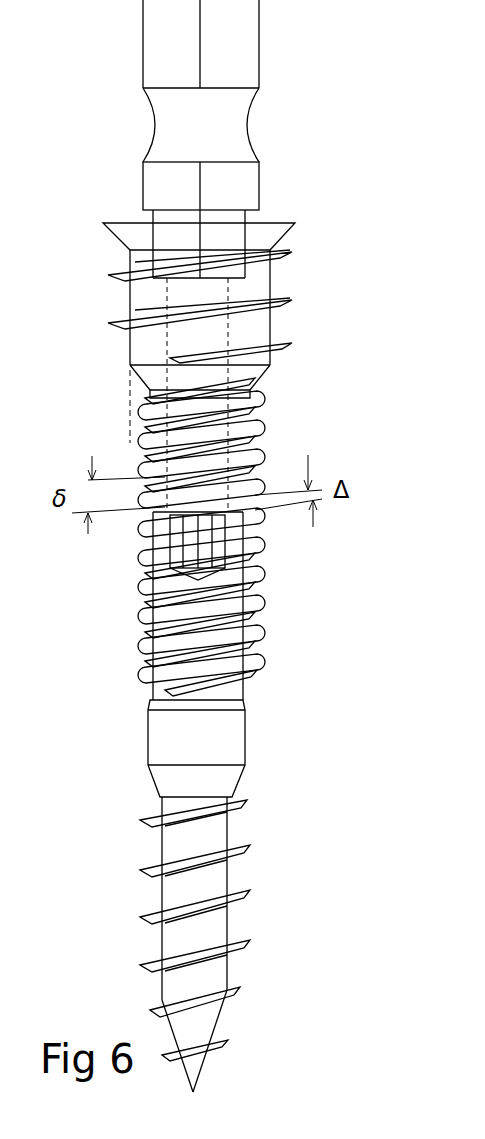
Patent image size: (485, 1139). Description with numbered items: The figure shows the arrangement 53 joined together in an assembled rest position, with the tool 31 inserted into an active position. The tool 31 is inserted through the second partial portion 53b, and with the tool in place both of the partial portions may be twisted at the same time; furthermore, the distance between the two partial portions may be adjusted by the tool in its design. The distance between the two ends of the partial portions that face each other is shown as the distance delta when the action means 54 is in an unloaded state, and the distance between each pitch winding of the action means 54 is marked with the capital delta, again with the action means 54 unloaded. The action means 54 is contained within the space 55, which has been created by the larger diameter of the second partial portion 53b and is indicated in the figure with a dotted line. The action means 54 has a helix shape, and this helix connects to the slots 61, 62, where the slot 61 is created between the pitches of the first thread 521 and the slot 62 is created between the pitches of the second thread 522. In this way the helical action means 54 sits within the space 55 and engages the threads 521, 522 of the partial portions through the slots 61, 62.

The tool 31 is at (117, 123).
The arrangement 53 is at (88, 272).
The second partial portion 53b is at (255, 322).
The space 55 is at (145, 398).
The slot 62 is at (143, 431).
The action means 54 is at (147, 622).
The slot 61 is at (147, 665).
The second thread 522 is at (247, 427).
The first thread 521 is at (250, 683).